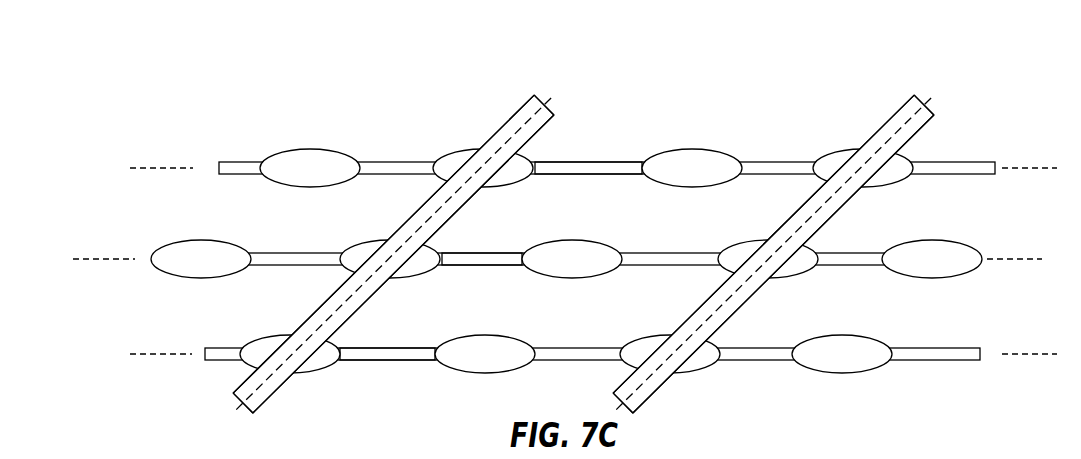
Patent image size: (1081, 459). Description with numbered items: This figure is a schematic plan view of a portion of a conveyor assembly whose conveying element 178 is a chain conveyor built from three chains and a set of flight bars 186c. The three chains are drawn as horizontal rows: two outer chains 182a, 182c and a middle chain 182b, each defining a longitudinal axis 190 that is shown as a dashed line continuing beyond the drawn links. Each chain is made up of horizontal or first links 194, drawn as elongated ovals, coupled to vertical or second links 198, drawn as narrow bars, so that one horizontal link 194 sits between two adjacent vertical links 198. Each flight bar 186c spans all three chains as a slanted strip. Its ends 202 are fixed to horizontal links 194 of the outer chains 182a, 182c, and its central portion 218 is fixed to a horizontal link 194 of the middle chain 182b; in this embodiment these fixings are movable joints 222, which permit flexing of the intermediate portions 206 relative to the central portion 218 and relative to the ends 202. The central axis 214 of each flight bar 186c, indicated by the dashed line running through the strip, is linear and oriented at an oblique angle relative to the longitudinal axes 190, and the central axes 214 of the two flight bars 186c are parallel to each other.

The conveying element 178 is at (984, 132).
The outer chain 182a is at (1000, 161).
The middle chain 182b is at (974, 243).
The outer chain 182c is at (979, 346).
The flight bar 186c is at (472, 126).
The longitudinal axis 190 is at (158, 166).
The horizontal link 194 is at (713, 150).
The vertical link 198 is at (623, 161).
The end 202 is at (478, 150).
The intermediate portion 206 is at (433, 190).
The central axis 214 is at (553, 102).
The central portion 218 is at (372, 243).
The movable joint 222 is at (518, 180).